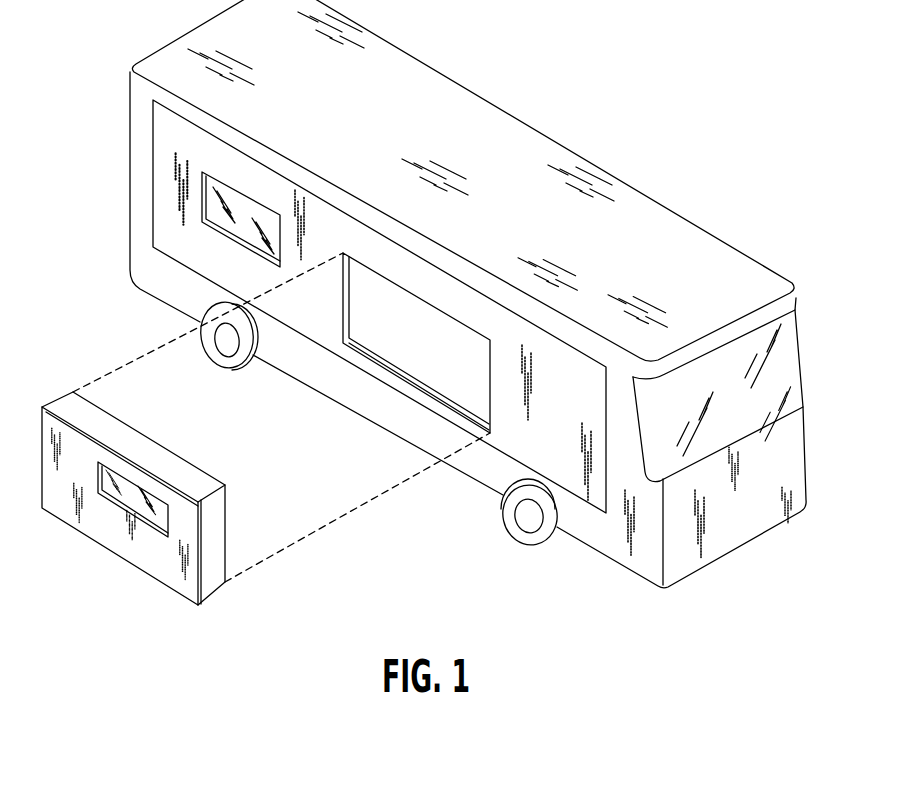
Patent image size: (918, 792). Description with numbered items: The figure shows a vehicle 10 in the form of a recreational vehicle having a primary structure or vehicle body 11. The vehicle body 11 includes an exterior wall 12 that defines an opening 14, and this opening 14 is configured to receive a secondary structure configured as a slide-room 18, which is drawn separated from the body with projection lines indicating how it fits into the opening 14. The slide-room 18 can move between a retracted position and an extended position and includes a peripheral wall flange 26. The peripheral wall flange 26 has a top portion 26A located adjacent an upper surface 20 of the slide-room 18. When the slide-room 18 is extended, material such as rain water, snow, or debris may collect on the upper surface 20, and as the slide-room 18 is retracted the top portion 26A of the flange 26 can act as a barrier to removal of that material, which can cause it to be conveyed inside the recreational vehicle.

The vehicle 10 is at (663, 157).
The vehicle body 11 is at (463, 108).
The exterior wall 12 is at (566, 340).
The opening 14 is at (437, 308).
The slide-room 18 is at (155, 473).
The upper surface 20 is at (70, 405).
The peripheral wall flange 26 is at (202, 563).
The top portion 26A is at (163, 478).